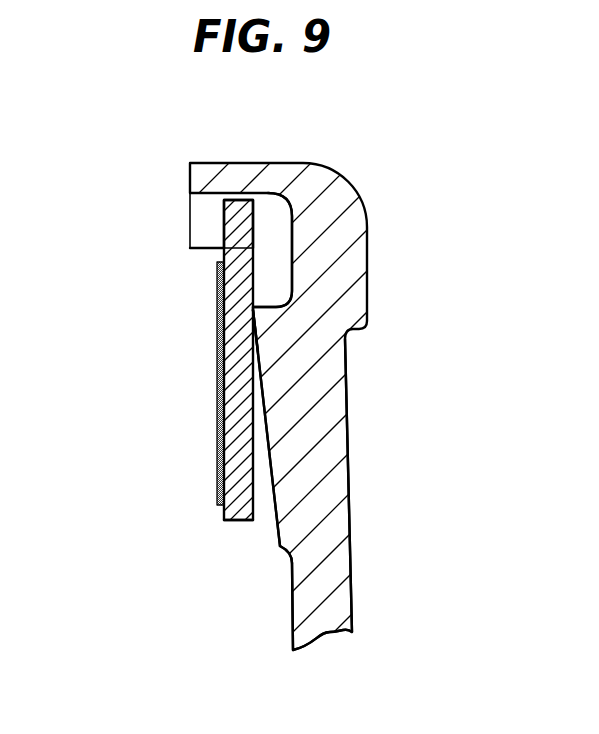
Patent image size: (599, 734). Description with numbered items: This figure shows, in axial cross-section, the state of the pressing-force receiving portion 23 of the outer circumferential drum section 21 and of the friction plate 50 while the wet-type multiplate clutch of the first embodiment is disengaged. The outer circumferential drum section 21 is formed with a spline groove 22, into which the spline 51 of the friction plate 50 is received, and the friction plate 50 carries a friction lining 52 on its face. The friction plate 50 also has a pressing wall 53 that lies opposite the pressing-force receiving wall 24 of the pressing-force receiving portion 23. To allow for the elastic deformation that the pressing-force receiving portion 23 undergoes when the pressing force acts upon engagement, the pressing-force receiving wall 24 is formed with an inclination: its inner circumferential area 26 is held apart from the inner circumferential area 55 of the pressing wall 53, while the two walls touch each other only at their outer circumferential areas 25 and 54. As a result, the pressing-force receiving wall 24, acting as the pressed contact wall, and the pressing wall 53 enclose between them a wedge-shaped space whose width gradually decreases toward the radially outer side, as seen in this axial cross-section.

The outer circumferential drum section 21 is at (258, 175).
The spline groove 22 is at (268, 221).
The pressing-force receiving portion 23 is at (314, 507).
The pressing-force receiving wall 24 is at (268, 443).
The outer circumferential area of the pressing-force receiving wall 25 is at (255, 351).
The inner circumferential area of the pressing-force receiving wall 26 is at (275, 517).
The friction plate 50 is at (232, 289).
The spline 51 is at (222, 229).
The friction lining 52 is at (219, 382).
The pressing wall 53 is at (228, 409).
The outer circumferential area of the pressing wall 54 is at (224, 333).
The inner circumferential area of the pressing wall 55 is at (235, 521).